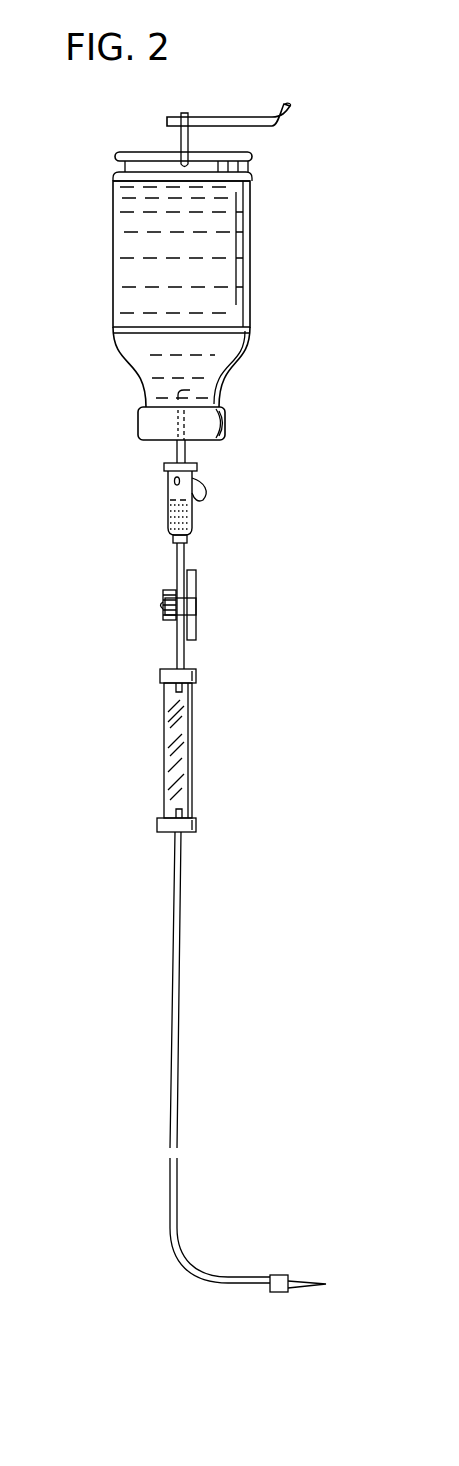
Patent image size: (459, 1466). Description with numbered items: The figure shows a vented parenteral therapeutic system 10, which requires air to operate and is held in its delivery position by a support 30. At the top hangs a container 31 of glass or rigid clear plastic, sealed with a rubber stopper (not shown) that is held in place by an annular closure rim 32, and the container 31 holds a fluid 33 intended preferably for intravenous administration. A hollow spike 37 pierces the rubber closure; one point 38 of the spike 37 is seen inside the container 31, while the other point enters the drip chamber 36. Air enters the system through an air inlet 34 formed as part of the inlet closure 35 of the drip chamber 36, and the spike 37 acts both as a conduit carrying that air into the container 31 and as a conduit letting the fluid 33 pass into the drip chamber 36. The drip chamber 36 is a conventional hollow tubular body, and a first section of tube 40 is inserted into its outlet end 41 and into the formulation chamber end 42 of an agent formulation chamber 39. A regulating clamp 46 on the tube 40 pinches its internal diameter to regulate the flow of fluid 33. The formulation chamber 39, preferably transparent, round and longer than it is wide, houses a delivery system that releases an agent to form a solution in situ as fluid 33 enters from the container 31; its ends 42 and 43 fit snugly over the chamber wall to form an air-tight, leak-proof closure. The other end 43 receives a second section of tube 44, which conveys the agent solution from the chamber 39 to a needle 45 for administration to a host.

The parenteral therapeutic system 10 is at (96, 216).
The support 30 is at (206, 115).
The container 31 is at (252, 228).
The annular closure rim 32 is at (226, 425).
The fluid 33 is at (220, 291).
The air inlet 34 is at (205, 496).
The inlet closure 35 is at (197, 466).
The drip chamber 36 is at (168, 493).
The spike 37 is at (176, 447).
The point of spike 38 is at (188, 394).
The agent formulation chamber 39 is at (193, 747).
The first section of tube 40 is at (177, 564).
The outlet end of drip chamber 41 is at (173, 538).
The formulation chamber end 42 is at (197, 675).
The other end of formulation chamber 43 is at (197, 823).
The second section of tube 44 is at (178, 1046).
The needle 45 is at (289, 1280).
The regulating clamp 46 is at (197, 606).